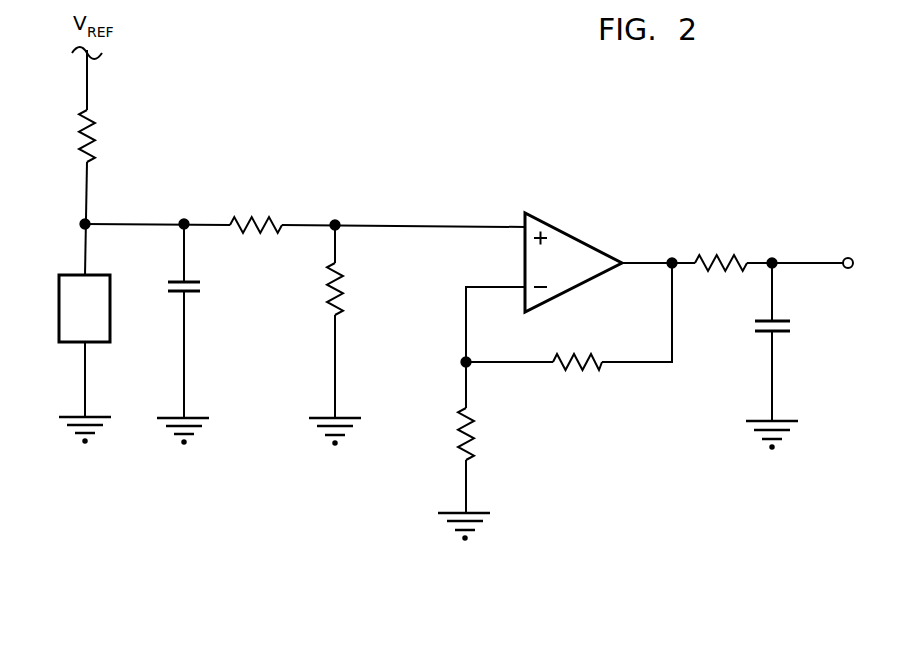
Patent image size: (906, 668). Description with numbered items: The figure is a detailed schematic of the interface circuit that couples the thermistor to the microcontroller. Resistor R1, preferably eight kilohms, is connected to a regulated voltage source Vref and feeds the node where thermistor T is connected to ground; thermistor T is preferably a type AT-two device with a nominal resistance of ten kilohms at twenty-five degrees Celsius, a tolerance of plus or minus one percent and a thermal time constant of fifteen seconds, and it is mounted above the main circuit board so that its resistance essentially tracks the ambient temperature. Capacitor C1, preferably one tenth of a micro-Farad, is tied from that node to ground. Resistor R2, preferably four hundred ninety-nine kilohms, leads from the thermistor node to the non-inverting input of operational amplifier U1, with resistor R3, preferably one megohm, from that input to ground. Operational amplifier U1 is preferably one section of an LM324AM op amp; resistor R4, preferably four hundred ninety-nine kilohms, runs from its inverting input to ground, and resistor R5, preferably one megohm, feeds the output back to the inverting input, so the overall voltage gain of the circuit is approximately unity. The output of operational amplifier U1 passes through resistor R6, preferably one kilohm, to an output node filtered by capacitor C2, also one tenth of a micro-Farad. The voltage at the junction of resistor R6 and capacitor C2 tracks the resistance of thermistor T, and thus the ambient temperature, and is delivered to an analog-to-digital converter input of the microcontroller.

The resistor R1 is at (92, 128).
The resistor R2 is at (251, 217).
The resistor R3 is at (343, 288).
The resistor R4 is at (458, 418).
The resistor R5 is at (565, 368).
The resistor R6 is at (717, 262).
The capacitor C1 is at (168, 286).
The capacitor C2 is at (755, 325).
The operational amplifier U1 is at (573, 262).
The thermistor T is at (84, 308).